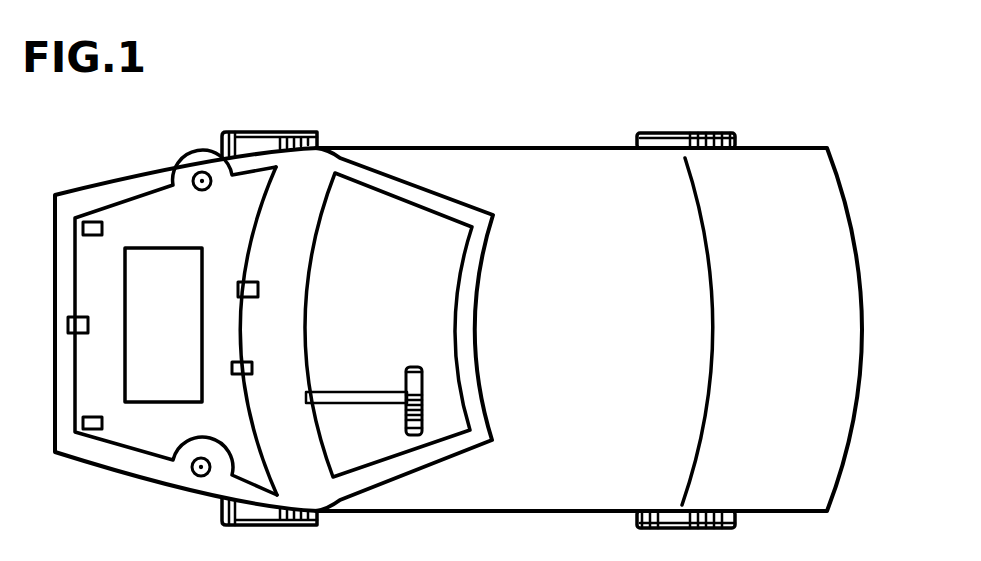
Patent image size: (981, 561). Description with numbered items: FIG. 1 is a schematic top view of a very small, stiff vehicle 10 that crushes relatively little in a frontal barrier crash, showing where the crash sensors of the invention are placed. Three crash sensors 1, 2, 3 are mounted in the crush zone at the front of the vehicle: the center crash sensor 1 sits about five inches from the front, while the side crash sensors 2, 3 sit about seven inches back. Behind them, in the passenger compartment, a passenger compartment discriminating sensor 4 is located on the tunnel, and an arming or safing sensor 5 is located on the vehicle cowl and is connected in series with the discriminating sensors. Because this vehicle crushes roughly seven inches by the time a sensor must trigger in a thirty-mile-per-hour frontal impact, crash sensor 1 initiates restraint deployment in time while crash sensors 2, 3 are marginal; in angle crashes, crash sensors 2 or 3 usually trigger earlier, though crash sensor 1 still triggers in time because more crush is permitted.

The vehicle 10 is at (503, 511).
The crash sensor 1 is at (88, 322).
The crash sensor 2 is at (102, 229).
The crash sensor 3 is at (102, 423).
The passenger compartment discriminating sensor 4 is at (250, 360).
The arming sensor 5 is at (255, 283).